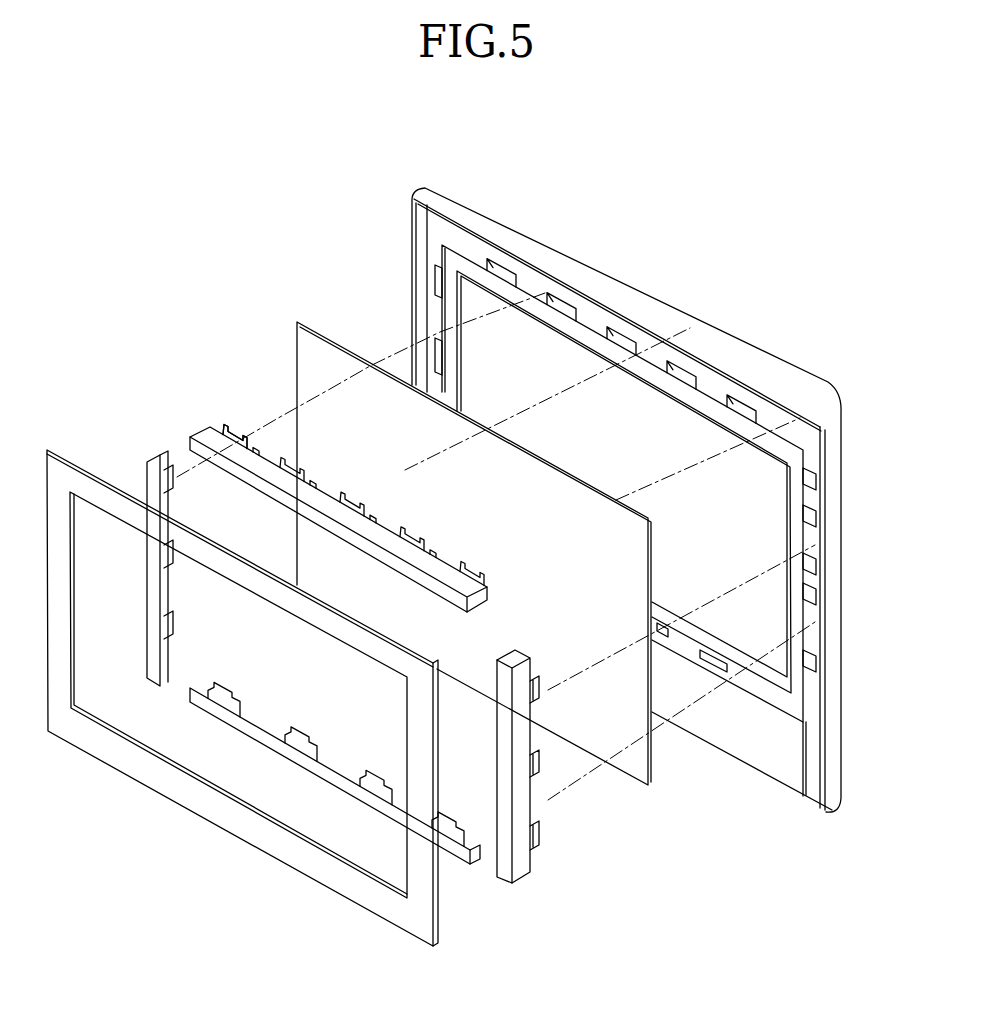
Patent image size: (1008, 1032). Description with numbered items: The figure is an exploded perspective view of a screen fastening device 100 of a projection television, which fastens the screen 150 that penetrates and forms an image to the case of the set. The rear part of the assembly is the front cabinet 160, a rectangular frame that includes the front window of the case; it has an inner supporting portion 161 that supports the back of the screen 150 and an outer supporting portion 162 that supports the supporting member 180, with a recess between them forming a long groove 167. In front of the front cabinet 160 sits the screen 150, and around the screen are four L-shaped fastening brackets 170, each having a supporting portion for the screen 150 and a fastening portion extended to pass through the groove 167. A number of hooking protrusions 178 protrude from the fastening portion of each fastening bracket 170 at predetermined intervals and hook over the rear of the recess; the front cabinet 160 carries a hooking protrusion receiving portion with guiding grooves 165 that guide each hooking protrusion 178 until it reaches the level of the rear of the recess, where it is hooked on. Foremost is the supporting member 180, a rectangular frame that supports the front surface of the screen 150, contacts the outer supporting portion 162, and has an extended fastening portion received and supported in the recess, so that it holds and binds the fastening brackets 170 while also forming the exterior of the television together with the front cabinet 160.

The screen fastening device 100 is at (178, 137).
The screen 150 is at (298, 345).
The front cabinet 160 is at (656, 453).
The inner supporting portion 161 is at (458, 264).
The outer supporting portion 162 is at (652, 342).
The guiding groove 165 is at (565, 297).
The long groove 167 is at (700, 380).
The fastening bracket 170 is at (452, 545).
The hooking protrusion 178 is at (227, 437).
The supporting member 180 is at (230, 853).